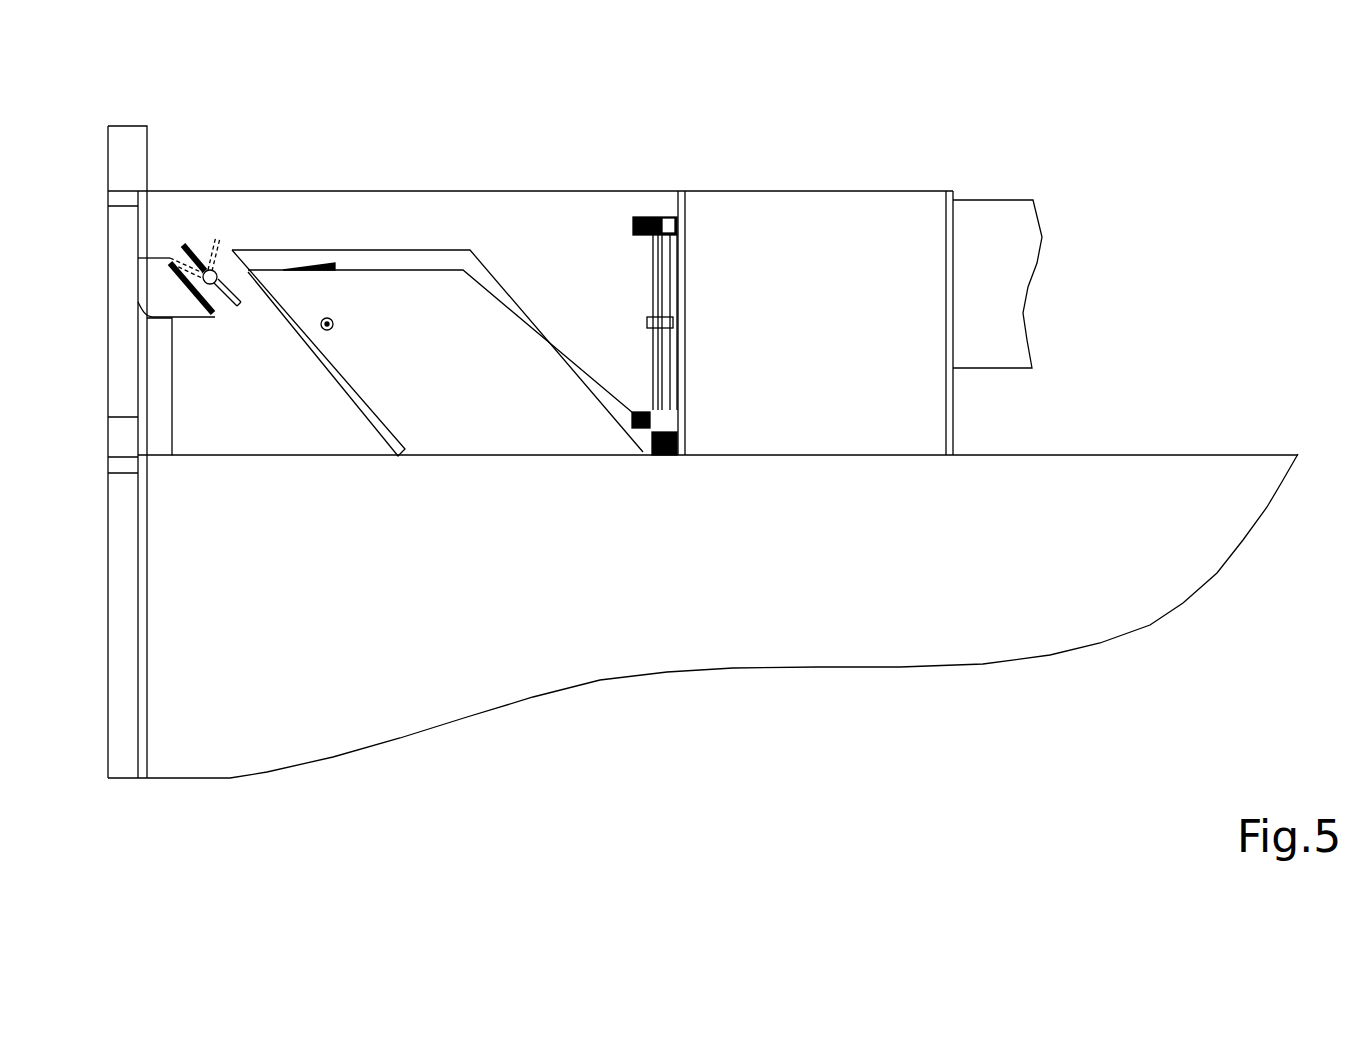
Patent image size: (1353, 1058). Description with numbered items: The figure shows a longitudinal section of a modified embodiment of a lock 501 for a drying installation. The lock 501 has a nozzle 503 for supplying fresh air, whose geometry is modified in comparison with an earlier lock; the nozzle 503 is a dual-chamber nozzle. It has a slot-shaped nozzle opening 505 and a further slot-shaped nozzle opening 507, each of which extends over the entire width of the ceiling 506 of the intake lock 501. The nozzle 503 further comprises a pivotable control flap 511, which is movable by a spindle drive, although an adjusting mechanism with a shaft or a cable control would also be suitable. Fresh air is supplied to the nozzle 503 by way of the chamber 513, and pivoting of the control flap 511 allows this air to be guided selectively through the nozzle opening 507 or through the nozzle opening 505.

The lock 501 is at (1190, 232).
The nozzle 503 is at (185, 216).
The nozzle opening 505 is at (227, 313).
The ceiling 506 is at (843, 455).
The nozzle opening 507 is at (248, 300).
The control flap 511 is at (182, 250).
The chamber 513 is at (550, 210).